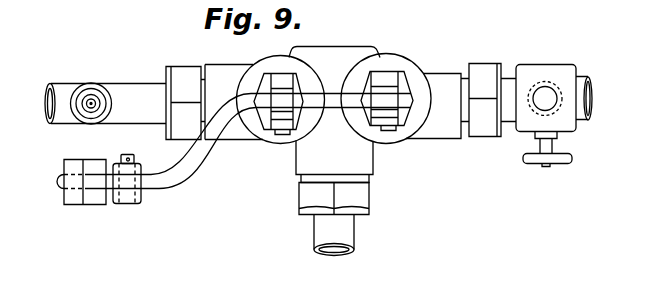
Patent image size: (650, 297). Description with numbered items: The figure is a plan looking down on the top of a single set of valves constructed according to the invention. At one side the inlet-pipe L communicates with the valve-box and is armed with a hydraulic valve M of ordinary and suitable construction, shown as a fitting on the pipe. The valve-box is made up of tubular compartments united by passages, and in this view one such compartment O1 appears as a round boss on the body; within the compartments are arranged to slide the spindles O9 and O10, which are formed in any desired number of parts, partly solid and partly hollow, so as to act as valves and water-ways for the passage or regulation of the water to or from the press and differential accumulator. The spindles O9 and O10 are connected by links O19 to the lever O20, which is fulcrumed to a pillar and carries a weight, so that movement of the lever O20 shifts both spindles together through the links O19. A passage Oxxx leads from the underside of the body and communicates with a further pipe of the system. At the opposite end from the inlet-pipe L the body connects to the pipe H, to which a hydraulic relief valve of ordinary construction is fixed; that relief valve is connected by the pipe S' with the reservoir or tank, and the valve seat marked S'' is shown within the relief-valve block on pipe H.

The hydraulic valve M is at (86, 85).
The inlet-pipe L is at (105, 104).
The lever O20 is at (335, 73).
The links O19 is at (396, 76).
The spindle O9 is at (299, 120).
The spindle O10 is at (404, 106).
The compartment O1 is at (408, 129).
The passage Oxxx is at (347, 222).
The valve seat S'' is at (537, 80).
The pipe S' is at (539, 145).
The pipe H is at (584, 75).